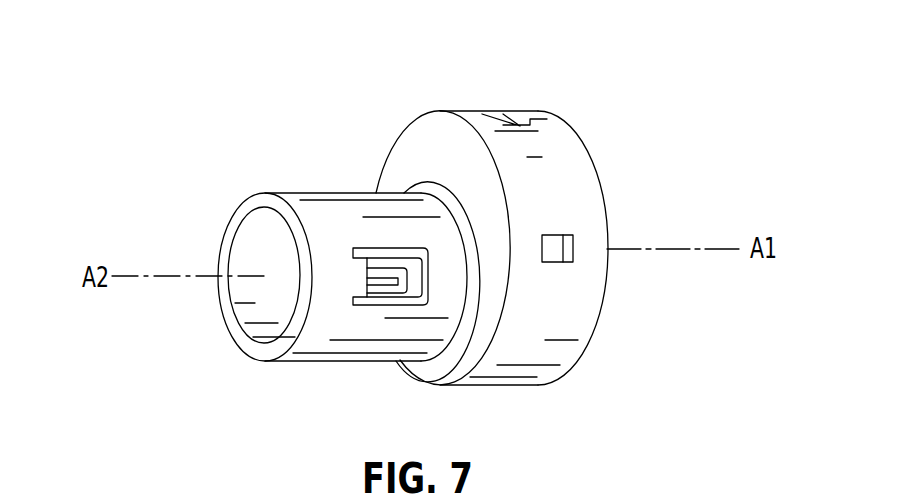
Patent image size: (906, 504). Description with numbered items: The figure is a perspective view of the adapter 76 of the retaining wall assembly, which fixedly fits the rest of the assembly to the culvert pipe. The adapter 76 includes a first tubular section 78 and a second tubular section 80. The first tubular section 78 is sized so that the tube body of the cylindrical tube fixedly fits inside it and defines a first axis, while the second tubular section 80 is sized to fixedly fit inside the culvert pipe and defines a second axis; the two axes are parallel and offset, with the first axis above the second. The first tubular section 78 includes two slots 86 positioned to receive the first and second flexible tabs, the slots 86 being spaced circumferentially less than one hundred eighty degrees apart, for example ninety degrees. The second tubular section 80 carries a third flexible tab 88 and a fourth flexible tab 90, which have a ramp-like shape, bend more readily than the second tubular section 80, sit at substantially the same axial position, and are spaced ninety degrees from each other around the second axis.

The adapter 76 is at (408, 84).
The first tubular section 78 is at (565, 170).
The second tubular section 80 is at (295, 192).
The slots 86 is at (510, 112).
The third flexible tab 88 is at (340, 192).
The fourth flexible tab 90 is at (370, 299).